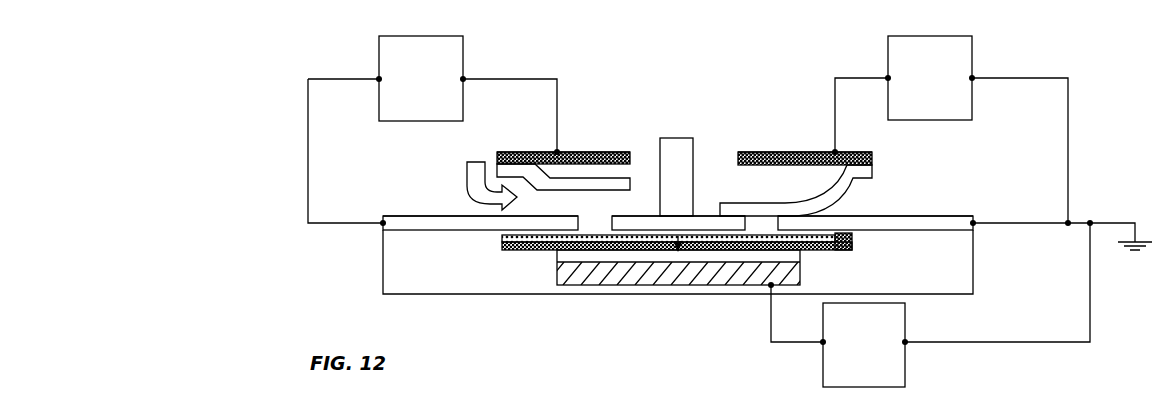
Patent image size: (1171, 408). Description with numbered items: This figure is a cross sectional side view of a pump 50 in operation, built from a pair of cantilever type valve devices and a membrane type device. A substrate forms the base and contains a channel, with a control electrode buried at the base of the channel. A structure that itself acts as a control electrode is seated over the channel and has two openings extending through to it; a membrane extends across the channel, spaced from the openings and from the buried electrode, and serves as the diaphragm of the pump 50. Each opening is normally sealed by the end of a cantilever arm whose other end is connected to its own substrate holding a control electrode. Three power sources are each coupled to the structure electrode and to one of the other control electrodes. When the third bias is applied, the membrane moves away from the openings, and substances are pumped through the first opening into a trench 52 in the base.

The pump 50 is at (294, 196).
The trench 52 is at (547, 236).